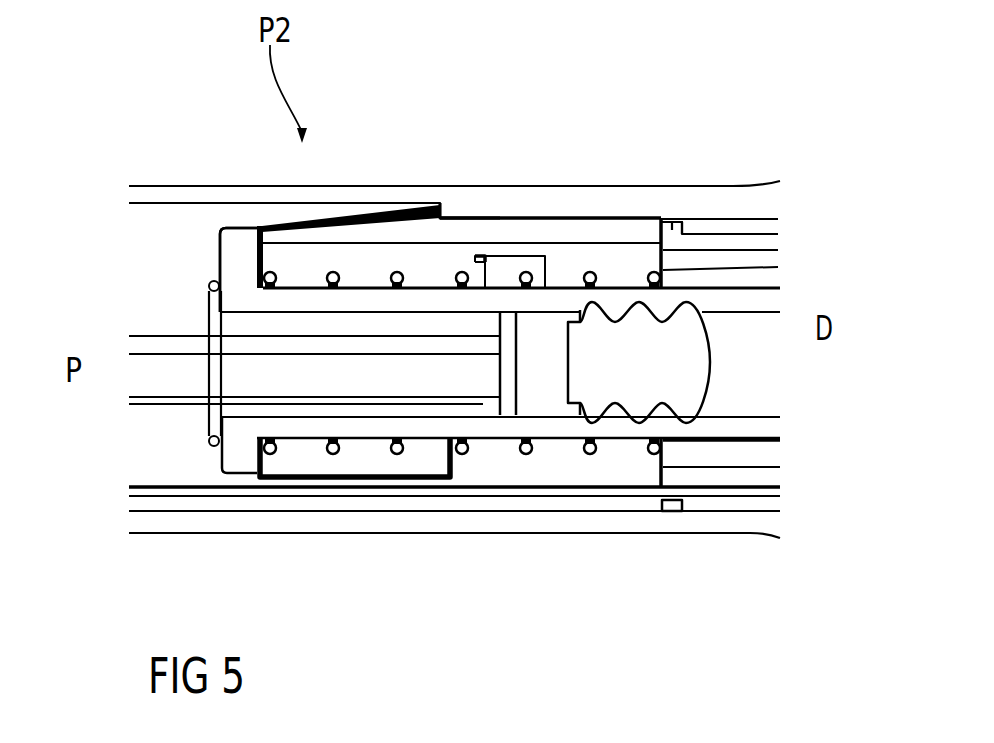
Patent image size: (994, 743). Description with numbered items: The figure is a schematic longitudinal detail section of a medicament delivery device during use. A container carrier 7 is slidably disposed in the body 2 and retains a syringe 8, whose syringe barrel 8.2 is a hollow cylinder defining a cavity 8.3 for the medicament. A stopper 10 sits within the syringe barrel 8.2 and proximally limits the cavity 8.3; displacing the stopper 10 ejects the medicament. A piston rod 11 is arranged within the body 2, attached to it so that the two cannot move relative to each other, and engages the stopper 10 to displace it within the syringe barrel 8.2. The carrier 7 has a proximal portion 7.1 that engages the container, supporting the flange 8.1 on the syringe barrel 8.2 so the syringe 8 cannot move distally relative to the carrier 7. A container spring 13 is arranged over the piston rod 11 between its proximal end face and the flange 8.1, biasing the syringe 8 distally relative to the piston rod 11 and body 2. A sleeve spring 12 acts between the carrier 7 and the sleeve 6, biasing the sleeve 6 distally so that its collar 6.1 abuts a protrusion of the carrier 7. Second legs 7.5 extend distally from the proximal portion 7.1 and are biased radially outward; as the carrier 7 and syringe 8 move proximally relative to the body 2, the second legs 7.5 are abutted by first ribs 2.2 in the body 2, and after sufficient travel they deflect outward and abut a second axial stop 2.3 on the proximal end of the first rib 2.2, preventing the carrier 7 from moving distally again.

The body 2 is at (598, 186).
The first rib 2.2 is at (530, 186).
The second axial stop 2.3 is at (441, 205).
The sleeve 6 is at (760, 243).
The collar 6.1 is at (673, 218).
The container carrier 7 is at (258, 228).
The proximal portion 7.1 is at (239, 270).
The second leg 7.5 is at (362, 212).
The syringe 8 is at (765, 427).
The flange 8.1 is at (240, 467).
The syringe barrel 8.2 is at (454, 499).
The cavity 8.3 is at (757, 355).
The stopper 10 is at (639, 403).
The piston rod 11 is at (137, 343).
The sleeve spring 12 is at (398, 454).
The container spring 13 is at (214, 446).